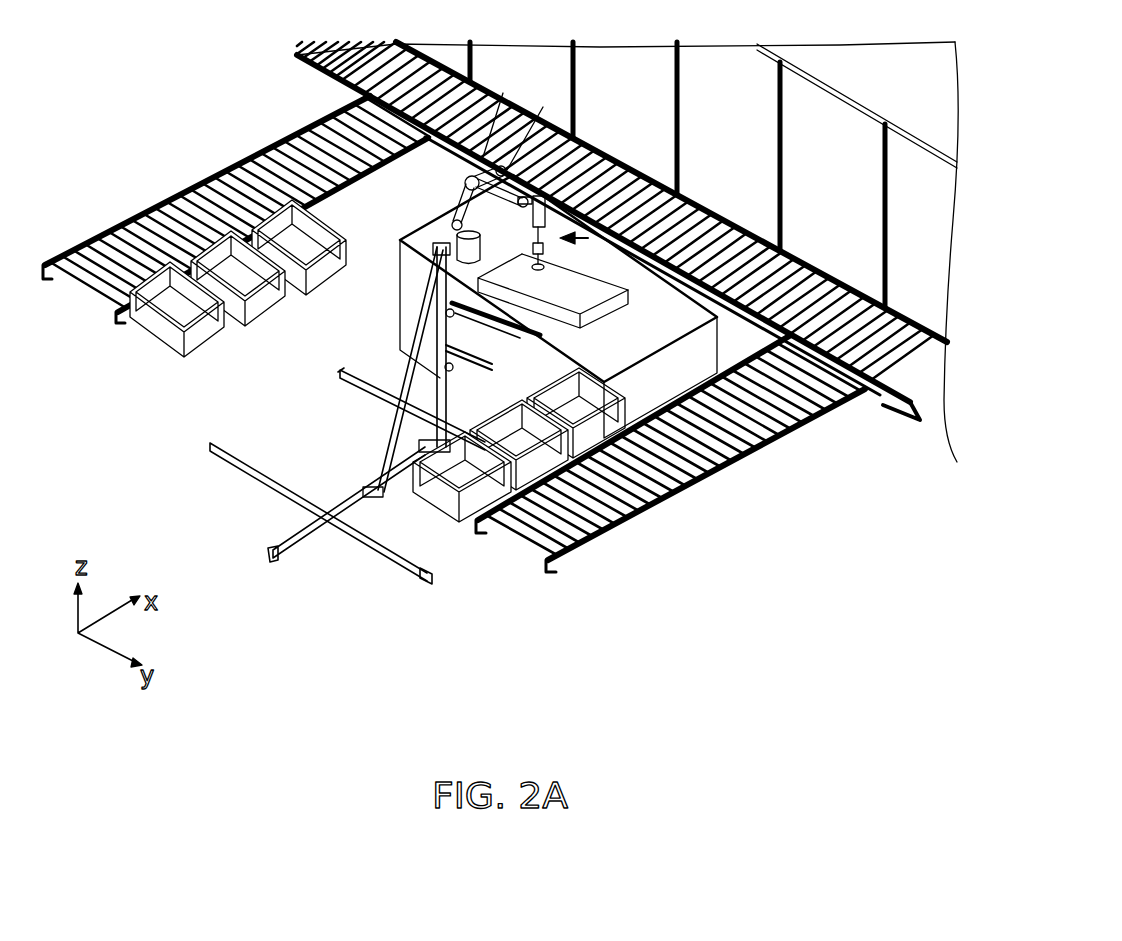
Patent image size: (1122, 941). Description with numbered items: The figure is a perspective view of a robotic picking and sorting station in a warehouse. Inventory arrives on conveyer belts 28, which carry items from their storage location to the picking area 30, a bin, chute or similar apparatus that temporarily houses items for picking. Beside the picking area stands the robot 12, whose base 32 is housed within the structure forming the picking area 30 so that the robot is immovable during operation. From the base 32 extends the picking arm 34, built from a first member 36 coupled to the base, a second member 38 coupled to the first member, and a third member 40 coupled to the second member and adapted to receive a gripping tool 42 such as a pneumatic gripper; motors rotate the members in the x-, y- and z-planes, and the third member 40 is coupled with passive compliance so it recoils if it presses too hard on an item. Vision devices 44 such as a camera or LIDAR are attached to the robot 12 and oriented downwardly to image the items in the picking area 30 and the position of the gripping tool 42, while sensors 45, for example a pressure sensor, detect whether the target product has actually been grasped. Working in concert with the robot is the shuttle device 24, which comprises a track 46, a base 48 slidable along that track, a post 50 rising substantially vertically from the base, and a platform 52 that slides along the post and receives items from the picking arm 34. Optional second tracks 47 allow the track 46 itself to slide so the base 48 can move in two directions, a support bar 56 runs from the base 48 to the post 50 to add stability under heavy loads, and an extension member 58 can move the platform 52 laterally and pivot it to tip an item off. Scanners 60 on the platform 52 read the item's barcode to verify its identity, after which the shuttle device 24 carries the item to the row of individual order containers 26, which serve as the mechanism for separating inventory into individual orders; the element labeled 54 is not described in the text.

The robot 12 is at (627, 252).
The shuttle device 24 is at (338, 459).
The individual order containers 26 is at (334, 345).
The conveyer belts 28 is at (722, 483).
The picking area 30 is at (558, 306).
The base 32 is at (452, 218).
The picking arm 34 is at (505, 98).
The first member 36 is at (470, 215).
The second member 38 is at (533, 115).
The third member 40 is at (622, 158).
The gripping tool 42 is at (598, 300).
The vision devices 44 is at (600, 272).
The sensors 45 is at (530, 225).
The track 46 is at (300, 525).
The second tracks 47 is at (350, 395).
The base 48 is at (457, 505).
The post 50 is at (412, 370).
The platform 52 is at (434, 265).
The rail end 54 is at (413, 576).
The support bar 56 is at (390, 448).
The extension member 58 is at (452, 382).
The scanners 60 is at (518, 350).